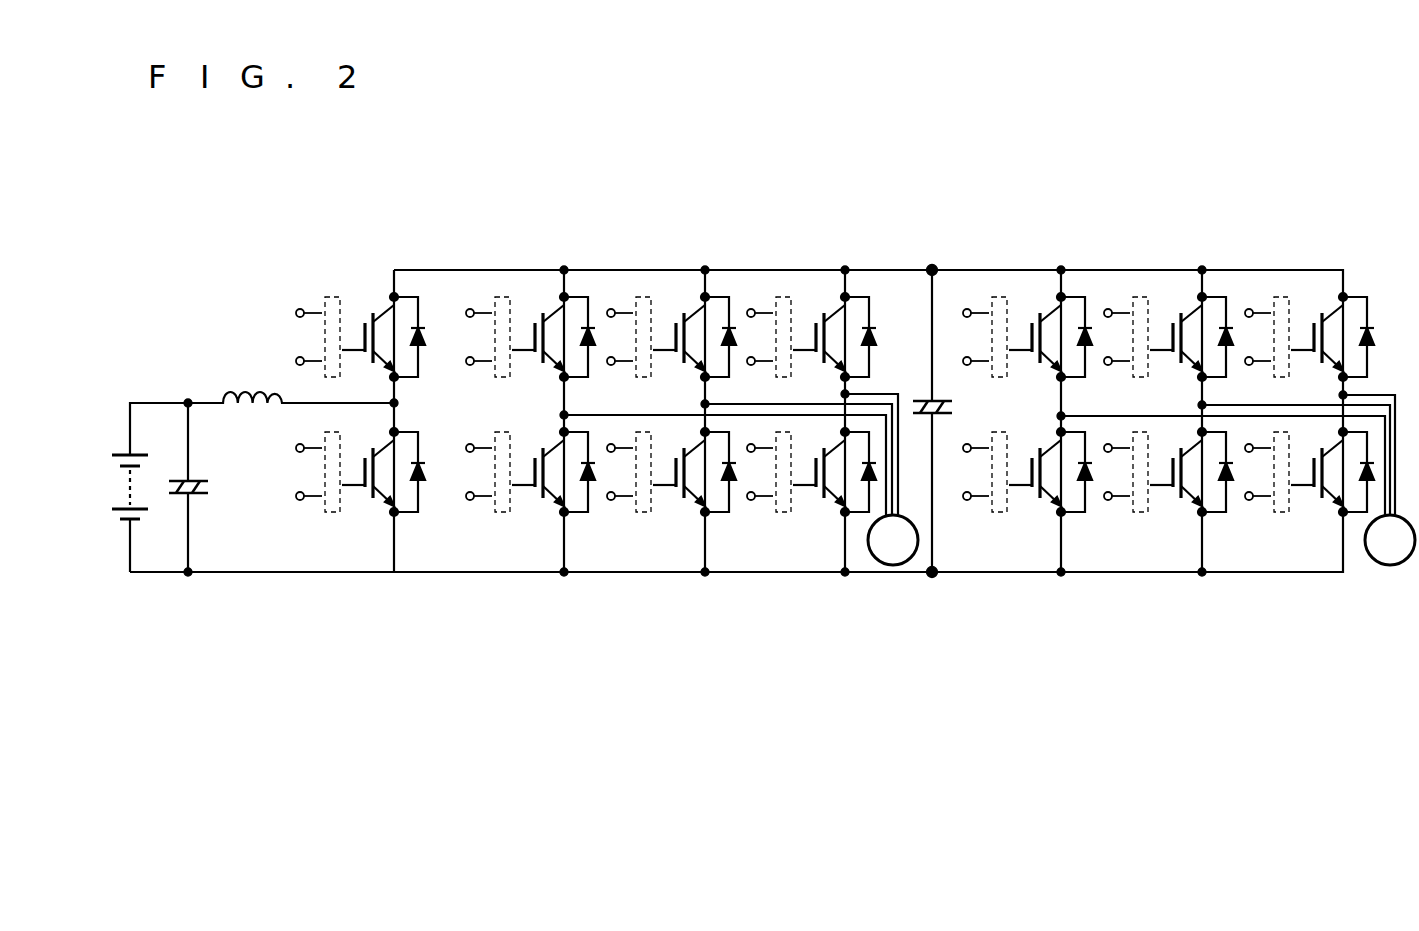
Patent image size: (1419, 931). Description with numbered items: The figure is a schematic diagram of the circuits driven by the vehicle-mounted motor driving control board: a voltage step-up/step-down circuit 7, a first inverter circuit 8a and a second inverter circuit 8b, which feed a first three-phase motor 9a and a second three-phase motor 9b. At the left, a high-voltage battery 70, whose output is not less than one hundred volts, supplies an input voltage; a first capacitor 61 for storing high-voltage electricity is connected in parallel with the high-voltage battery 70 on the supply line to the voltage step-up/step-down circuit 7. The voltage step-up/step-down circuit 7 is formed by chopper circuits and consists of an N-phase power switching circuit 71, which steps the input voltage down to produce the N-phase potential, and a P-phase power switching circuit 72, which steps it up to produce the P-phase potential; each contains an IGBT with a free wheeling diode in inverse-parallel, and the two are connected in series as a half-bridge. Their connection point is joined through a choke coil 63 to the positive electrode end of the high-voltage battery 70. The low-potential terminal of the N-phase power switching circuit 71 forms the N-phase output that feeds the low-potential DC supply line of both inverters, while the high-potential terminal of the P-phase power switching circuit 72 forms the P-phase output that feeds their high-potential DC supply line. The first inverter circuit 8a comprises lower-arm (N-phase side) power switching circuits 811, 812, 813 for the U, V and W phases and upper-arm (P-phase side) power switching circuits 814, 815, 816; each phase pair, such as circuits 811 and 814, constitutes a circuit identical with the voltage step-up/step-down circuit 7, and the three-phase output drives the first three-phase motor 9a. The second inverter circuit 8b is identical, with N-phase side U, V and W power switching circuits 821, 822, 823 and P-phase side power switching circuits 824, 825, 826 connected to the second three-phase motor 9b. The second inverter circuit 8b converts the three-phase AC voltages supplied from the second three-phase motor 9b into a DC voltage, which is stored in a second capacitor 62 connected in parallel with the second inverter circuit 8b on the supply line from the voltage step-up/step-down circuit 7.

The voltage step-up/step-down circuit 7 is at (341, 390).
The first inverter circuit 8a is at (652, 374).
The second inverter circuit 8b is at (1149, 374).
The first three-phase motor 9a is at (893, 565).
The second three-phase motor 9b is at (1388, 565).
The first capacitor 61 is at (203, 498).
The second capacitor 62 is at (925, 393).
The choke coil 63 is at (245, 380).
The high-voltage battery 70 is at (115, 430).
The N-phase power switching circuit 71 is at (387, 502).
The P-phase power switching circuit 72 is at (385, 300).
The U-phase power switching circuit on the N-phase side 811 is at (510, 507).
The V-phase power switching circuit on the N-phase side 812 is at (655, 507).
The W-phase power switching circuit on the N-phase side 813 is at (802, 507).
The U-phase power switching circuit on the P-phase side 814 is at (510, 287).
The V-phase power switching circuit on the P-phase side 815 is at (655, 287).
The W-phase power switching circuit on the P-phase side 816 is at (803, 287).
The U-phase power switching circuit on the N-phase side 821 is at (1017, 507).
The V-phase power switching circuit on the N-phase side 822 is at (1152, 507).
The W-phase power switching circuit on the N-phase side 823 is at (1300, 507).
The U-phase power switching circuit on the P-phase side 824 is at (1007, 290).
The V-phase power switching circuit on the P-phase side 825 is at (1152, 290).
The W-phase power switching circuit on the P-phase side 826 is at (1300, 290).